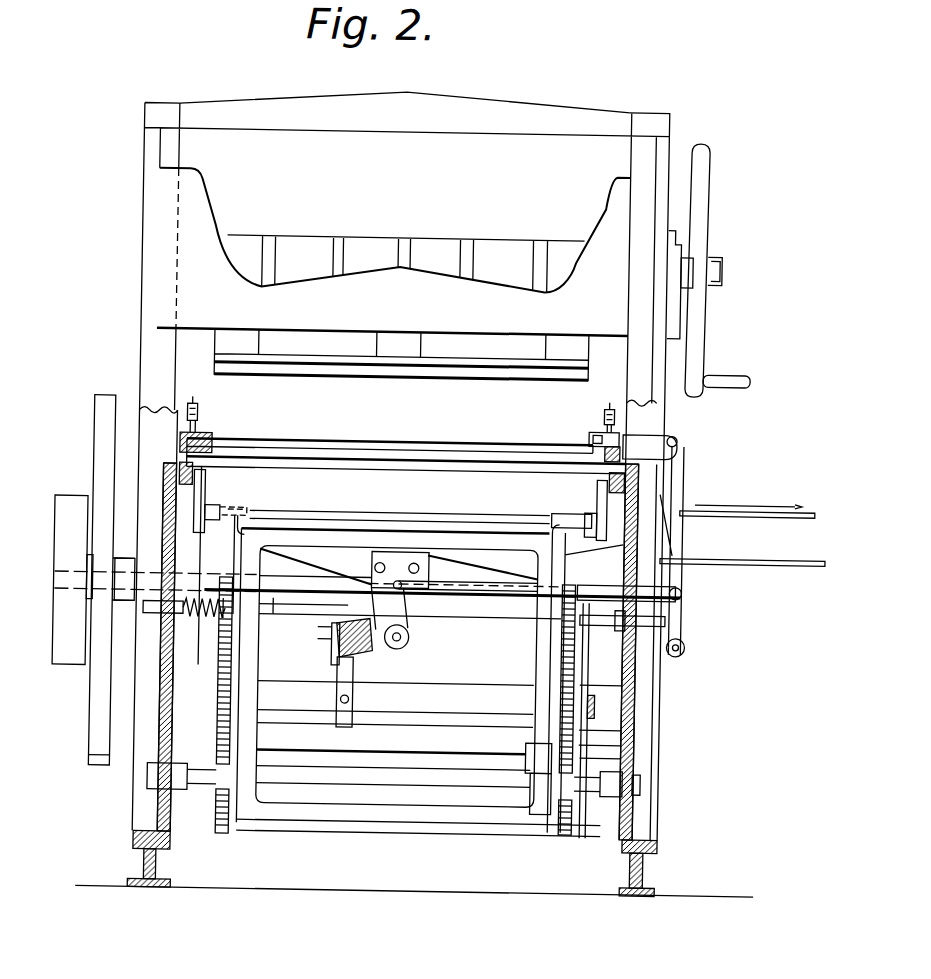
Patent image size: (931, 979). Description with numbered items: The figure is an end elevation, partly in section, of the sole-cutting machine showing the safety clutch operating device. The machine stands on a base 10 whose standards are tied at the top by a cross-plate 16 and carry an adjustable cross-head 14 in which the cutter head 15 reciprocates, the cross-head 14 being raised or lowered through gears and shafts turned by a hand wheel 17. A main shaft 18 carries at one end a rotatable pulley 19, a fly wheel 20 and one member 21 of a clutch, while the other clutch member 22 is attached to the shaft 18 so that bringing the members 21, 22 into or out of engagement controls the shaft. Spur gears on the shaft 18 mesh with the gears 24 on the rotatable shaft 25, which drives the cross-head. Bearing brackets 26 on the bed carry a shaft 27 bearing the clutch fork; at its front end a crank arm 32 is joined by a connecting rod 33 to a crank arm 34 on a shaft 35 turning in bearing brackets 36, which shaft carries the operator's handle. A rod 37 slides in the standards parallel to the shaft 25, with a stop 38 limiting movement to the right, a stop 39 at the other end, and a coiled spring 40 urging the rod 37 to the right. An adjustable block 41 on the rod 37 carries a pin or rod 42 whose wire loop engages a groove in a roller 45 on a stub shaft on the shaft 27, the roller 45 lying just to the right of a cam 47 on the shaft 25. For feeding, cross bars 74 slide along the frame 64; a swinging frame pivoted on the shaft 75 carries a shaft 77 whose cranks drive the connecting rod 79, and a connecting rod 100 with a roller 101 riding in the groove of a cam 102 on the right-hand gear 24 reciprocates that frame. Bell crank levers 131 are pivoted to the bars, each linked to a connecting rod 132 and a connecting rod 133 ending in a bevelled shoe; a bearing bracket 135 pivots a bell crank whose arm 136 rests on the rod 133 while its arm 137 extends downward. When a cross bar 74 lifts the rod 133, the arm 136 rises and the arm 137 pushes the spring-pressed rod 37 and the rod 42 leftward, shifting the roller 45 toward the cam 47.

The base 10 is at (150, 869).
The adjustable cross-head 14 is at (188, 241).
The cutter head 15 is at (338, 380).
The cross-plate 16 is at (512, 106).
The hand wheel 17 is at (703, 199).
The shaft 18 is at (104, 508).
The rotatable pulley 19 is at (70, 665).
The fly wheel 20 is at (100, 755).
The clutch member 21 is at (95, 713).
The clutch member 22 is at (155, 578).
The gears 24 is at (215, 745).
The rotatable shaft 25 is at (437, 708).
The bearing brackets 26 is at (405, 563).
The shaft 27 is at (405, 641).
The crank arm 32 is at (400, 614).
The connecting rod 33 is at (497, 592).
The crank arm 34 is at (672, 610).
The shaft 35 is at (689, 646).
The bearing brackets 36 is at (673, 655).
The rod 37 is at (280, 617).
The stop 38 is at (614, 617).
The stop 39 is at (218, 628).
The coiled spring 40 is at (182, 626).
The block 41 is at (310, 624).
The pin or rod 42 is at (338, 628).
The roller 45 is at (353, 656).
The cam 47 is at (350, 722).
The frame 64 is at (620, 470).
The cross bars 74 is at (314, 473).
The shaft 75 is at (426, 832).
The shaft 77 is at (378, 514).
The connecting rod 79 is at (206, 495).
The connecting rod 100 is at (598, 703).
The roller 101 is at (560, 706).
The cam 102 is at (596, 748).
The bell crank levers 131 is at (197, 430).
The connecting rod 132 is at (197, 395).
The connecting rod 133 is at (183, 440).
The bearing bracket 135 is at (640, 454).
The arm 136 is at (588, 432).
The arm 137 is at (676, 490).